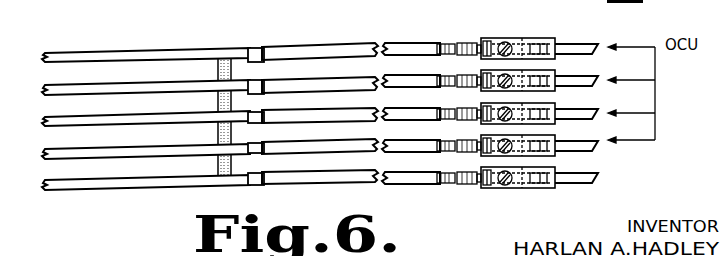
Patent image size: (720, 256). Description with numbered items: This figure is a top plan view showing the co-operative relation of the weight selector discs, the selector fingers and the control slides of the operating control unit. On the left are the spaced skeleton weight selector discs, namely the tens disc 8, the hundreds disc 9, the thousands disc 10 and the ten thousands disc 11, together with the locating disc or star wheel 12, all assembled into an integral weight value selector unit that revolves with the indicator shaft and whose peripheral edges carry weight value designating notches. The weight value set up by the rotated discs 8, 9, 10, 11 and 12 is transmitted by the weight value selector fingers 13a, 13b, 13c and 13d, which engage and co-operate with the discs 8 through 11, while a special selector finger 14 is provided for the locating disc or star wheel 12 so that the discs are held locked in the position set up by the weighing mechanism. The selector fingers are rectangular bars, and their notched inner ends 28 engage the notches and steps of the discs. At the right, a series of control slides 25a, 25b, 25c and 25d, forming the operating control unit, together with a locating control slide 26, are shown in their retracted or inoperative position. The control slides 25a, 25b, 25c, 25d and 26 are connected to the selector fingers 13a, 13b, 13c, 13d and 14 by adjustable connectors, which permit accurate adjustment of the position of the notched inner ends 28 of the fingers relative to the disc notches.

The tens disc 8 is at (142, 184).
The hundreds disc 9 is at (140, 152).
The thousands disc 10 is at (138, 121).
The ten thousands disc 11 is at (138, 87).
The locating disc or star wheel 12 is at (138, 54).
The weight value selector finger 13a is at (288, 85).
The weight value selector finger 13b is at (295, 115).
The weight value selector finger 13c is at (297, 147).
The weight value selector finger 13d is at (297, 178).
The special selector finger 14 is at (318, 50).
The control slide 25a is at (592, 81).
The control slide 25b is at (592, 113).
The control slide 25c is at (592, 144).
The control slide 25d is at (593, 175).
The locating control slide 26 is at (590, 49).
The notched inner end 28 is at (259, 90).